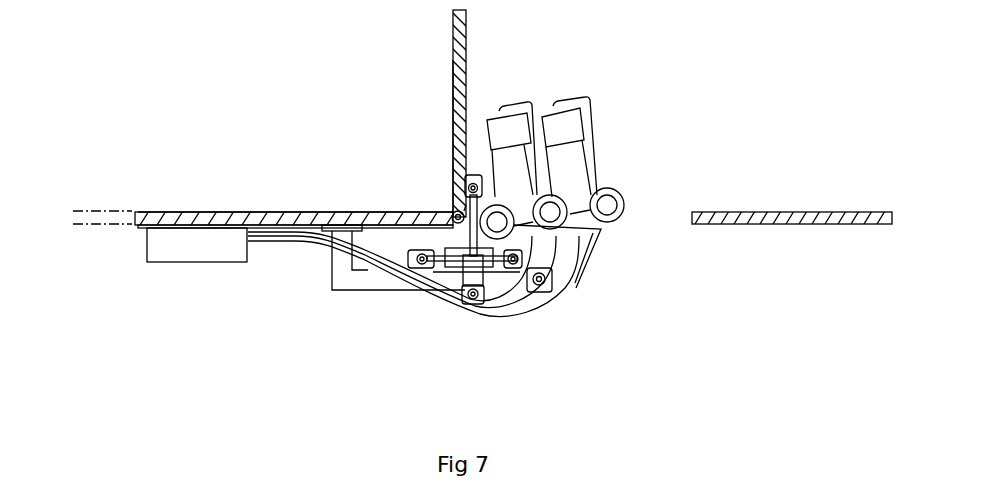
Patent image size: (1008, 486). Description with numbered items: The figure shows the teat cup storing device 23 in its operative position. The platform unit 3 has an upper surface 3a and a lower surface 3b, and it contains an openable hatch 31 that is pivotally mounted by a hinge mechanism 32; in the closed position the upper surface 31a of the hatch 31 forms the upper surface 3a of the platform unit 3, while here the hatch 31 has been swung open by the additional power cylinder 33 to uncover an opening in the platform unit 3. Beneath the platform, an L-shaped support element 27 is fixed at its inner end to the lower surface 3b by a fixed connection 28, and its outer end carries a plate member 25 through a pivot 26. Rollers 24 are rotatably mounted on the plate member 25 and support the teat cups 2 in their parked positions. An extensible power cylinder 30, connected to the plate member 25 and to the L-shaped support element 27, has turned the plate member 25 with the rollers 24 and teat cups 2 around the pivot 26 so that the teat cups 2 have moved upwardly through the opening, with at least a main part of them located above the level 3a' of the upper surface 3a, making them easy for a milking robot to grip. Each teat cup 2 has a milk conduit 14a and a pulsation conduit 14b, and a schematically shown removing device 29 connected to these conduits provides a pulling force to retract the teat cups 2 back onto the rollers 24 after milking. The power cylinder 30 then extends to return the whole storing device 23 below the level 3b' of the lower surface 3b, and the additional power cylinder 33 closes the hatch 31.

The teat cup 2 is at (553, 122).
The platform unit 3 is at (223, 210).
The upper surface of the platform unit 3a is at (295, 170).
The lower surface of the platform unit 3b is at (295, 186).
The level of the upper surface 3a' is at (102, 183).
The level of the lower surface 3b' is at (102, 262).
The milk conduit 14a is at (267, 235).
The pulsation conduit 14b is at (308, 245).
The teat cup storing device 23 is at (591, 300).
The roller 24 is at (607, 205).
The plate member 25 is at (586, 244).
The pivot 26 is at (538, 286).
The L-shaped support element 27 is at (353, 282).
The fixed connection 28 is at (342, 225).
The removing device 29 is at (193, 248).
The extensible power cylinder 30 is at (453, 262).
The hatch 31 is at (453, 75).
The upper surface of the hatch 31a is at (453, 128).
The hinge mechanism 32 is at (455, 214).
The additional power cylinder 33 is at (476, 272).